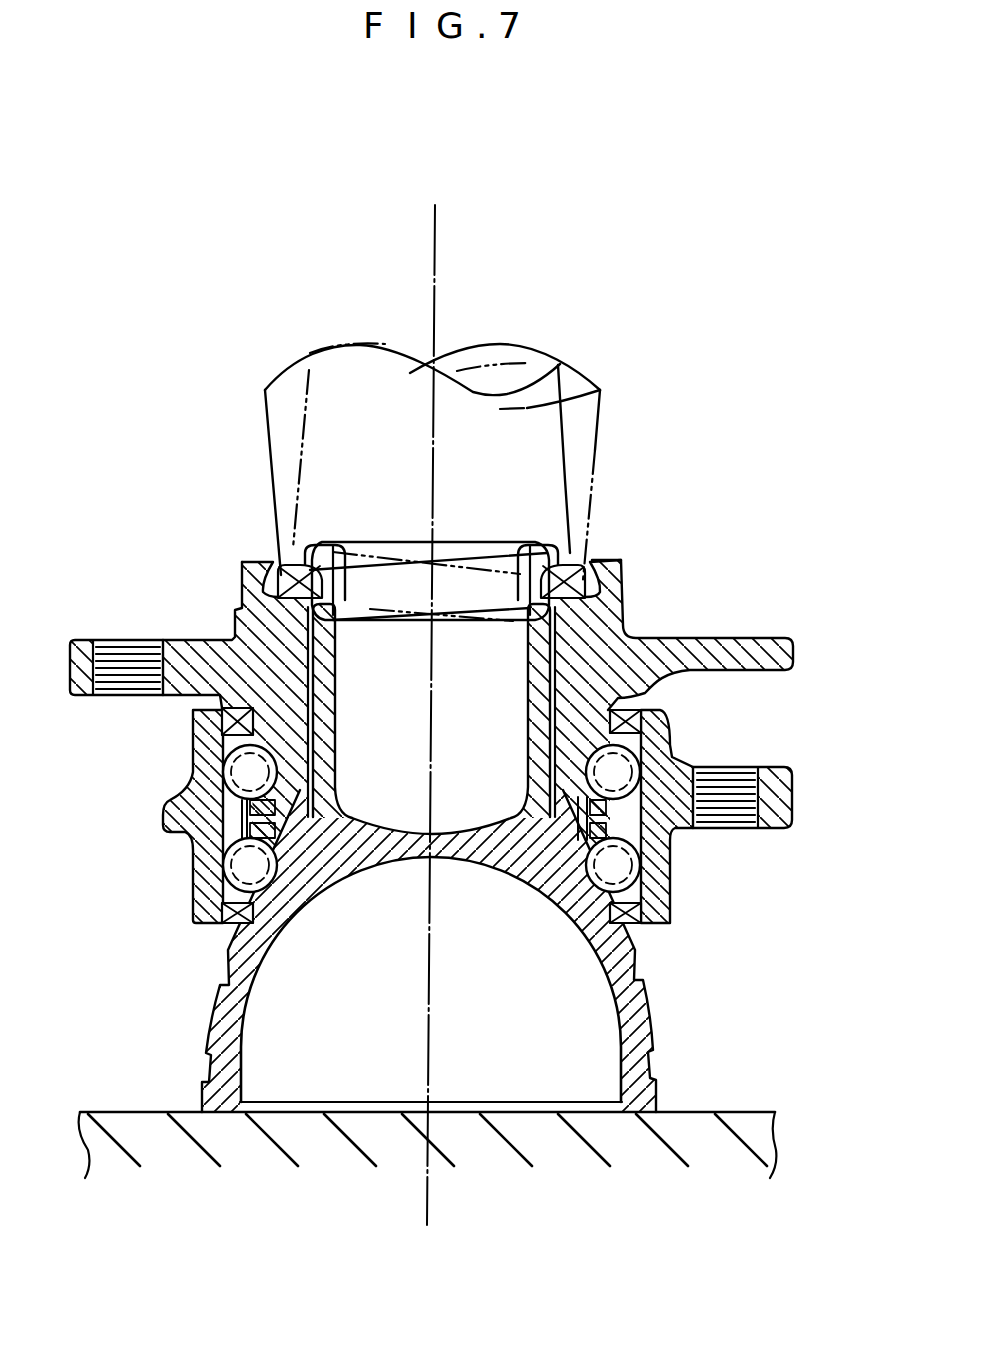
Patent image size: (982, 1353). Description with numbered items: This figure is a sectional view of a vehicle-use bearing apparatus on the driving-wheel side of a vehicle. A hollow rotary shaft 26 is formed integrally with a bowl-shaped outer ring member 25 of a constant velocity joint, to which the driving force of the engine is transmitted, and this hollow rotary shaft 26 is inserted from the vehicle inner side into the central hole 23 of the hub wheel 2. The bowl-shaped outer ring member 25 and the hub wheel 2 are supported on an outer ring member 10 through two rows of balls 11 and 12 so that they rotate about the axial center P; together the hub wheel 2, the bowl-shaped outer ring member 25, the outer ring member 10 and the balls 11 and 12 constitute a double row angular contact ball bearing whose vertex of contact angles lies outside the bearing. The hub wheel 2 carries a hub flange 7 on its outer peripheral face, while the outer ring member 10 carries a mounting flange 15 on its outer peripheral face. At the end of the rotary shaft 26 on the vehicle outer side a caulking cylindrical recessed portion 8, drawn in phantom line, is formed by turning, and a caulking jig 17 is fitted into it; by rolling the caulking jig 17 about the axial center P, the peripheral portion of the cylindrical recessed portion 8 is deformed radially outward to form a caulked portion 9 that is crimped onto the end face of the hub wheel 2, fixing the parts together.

The hub wheel 2 is at (608, 640).
The hub flange 7 is at (196, 648).
The caulking cylindrical recessed portion 8 is at (507, 537).
The caulked portion 9 is at (280, 582).
The outer ring member 10 is at (205, 845).
The balls 11 is at (643, 866).
The balls 12 is at (640, 765).
The mounting flange 15 is at (783, 801).
The caulking jig 17 is at (573, 373).
The central hole 23 is at (340, 676).
The bowl-shaped outer ring member 25 is at (637, 1008).
The hollow rotary shaft 26 is at (530, 682).
The axial center P is at (437, 290).